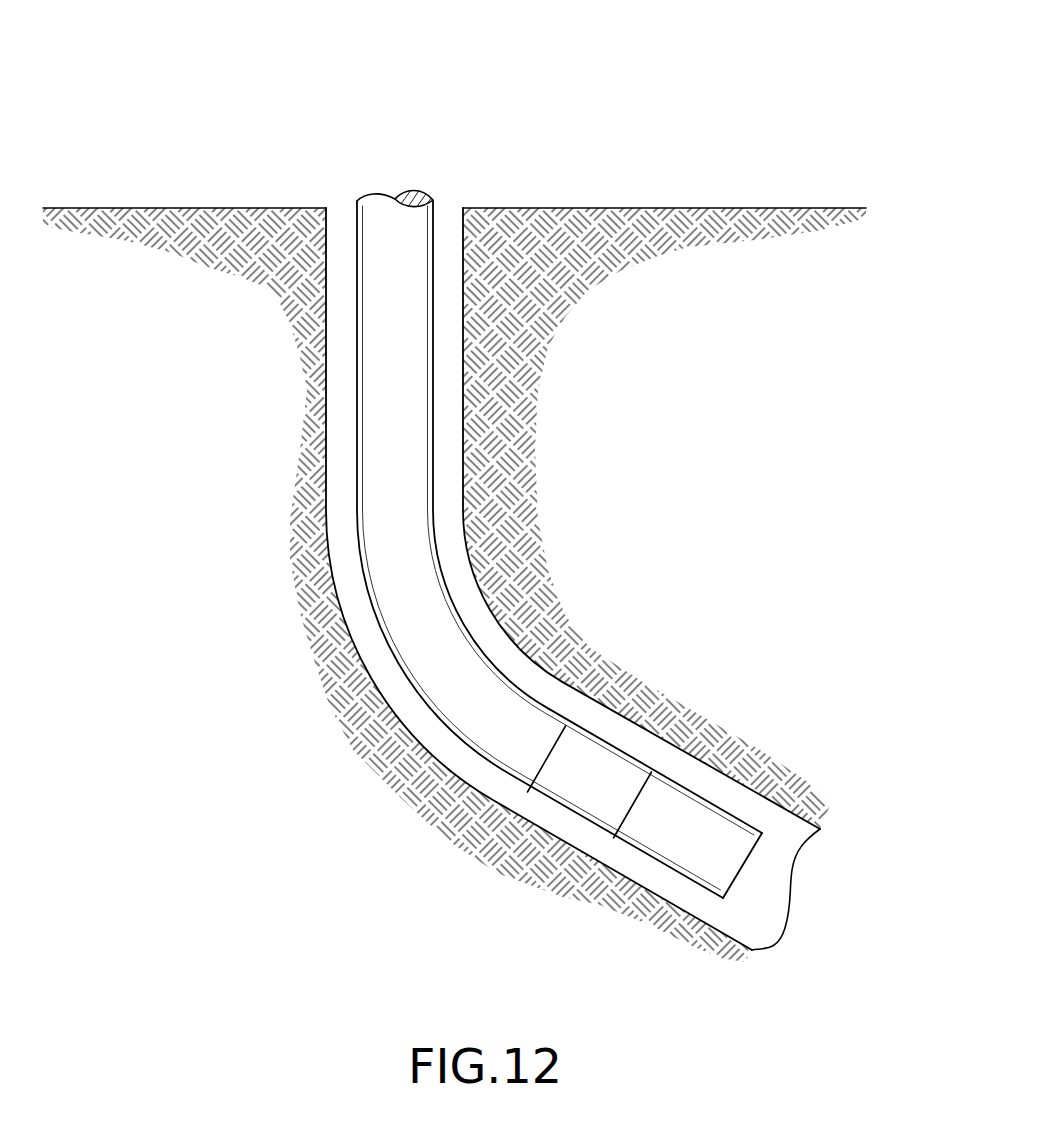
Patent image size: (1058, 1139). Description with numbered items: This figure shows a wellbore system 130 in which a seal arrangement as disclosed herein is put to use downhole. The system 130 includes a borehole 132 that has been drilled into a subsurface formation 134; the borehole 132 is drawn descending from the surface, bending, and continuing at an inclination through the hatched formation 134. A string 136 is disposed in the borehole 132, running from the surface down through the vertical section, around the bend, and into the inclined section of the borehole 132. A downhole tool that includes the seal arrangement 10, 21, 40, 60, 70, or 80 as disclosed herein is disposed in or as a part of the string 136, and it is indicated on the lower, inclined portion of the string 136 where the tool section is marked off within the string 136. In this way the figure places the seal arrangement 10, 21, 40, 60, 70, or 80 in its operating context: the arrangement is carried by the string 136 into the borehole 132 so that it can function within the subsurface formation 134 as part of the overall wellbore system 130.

The wellbore system 130 is at (490, 112).
The borehole 132 is at (328, 524).
The subsurface formation 134 is at (717, 310).
The string 136 is at (453, 594).
The seal arrangement 10 is at (742, 763).
The seal arrangement 21 is at (645, 812).
The seal arrangement 40 is at (645, 812).
The seal arrangement 60 is at (645, 812).
The seal arrangement 70 is at (645, 812).
The seal arrangement 80 is at (592, 752).